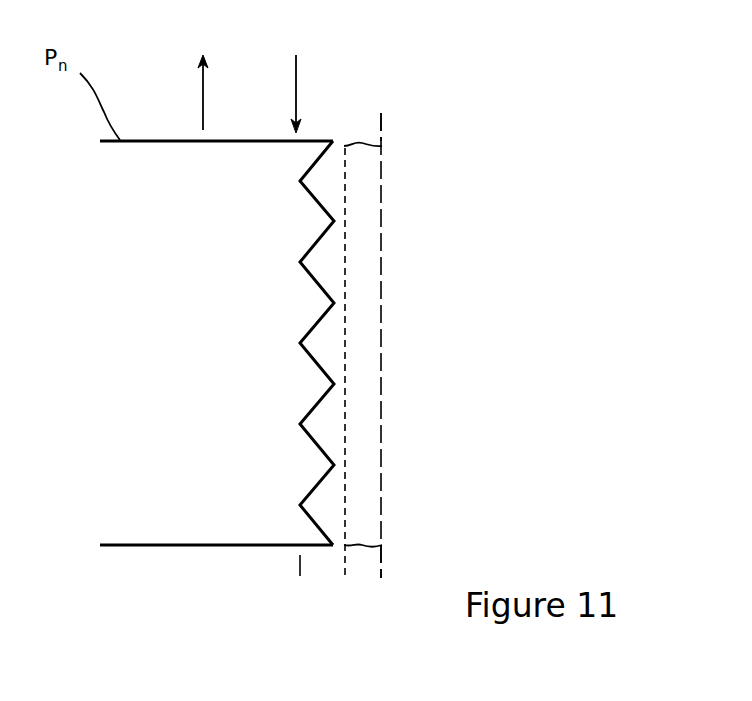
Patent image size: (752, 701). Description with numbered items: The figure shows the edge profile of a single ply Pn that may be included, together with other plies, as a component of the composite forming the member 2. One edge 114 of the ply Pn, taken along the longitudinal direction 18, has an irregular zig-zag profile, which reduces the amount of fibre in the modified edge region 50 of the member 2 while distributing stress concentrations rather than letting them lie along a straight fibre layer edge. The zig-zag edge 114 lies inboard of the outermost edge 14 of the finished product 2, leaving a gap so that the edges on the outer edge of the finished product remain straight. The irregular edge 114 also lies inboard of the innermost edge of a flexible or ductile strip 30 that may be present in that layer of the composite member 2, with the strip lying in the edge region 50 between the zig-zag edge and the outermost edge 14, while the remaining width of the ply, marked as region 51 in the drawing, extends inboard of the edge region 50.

The member 2 is at (362, 103).
The outermost edge 14 is at (397, 600).
The longitudinal direction 18 is at (223, 80).
The flexible or ductile strip 30 is at (370, 347).
The modified edge region 50 is at (381, 606).
The region / thickness 51 is at (295, 606).
The edge 114 is at (325, 81).